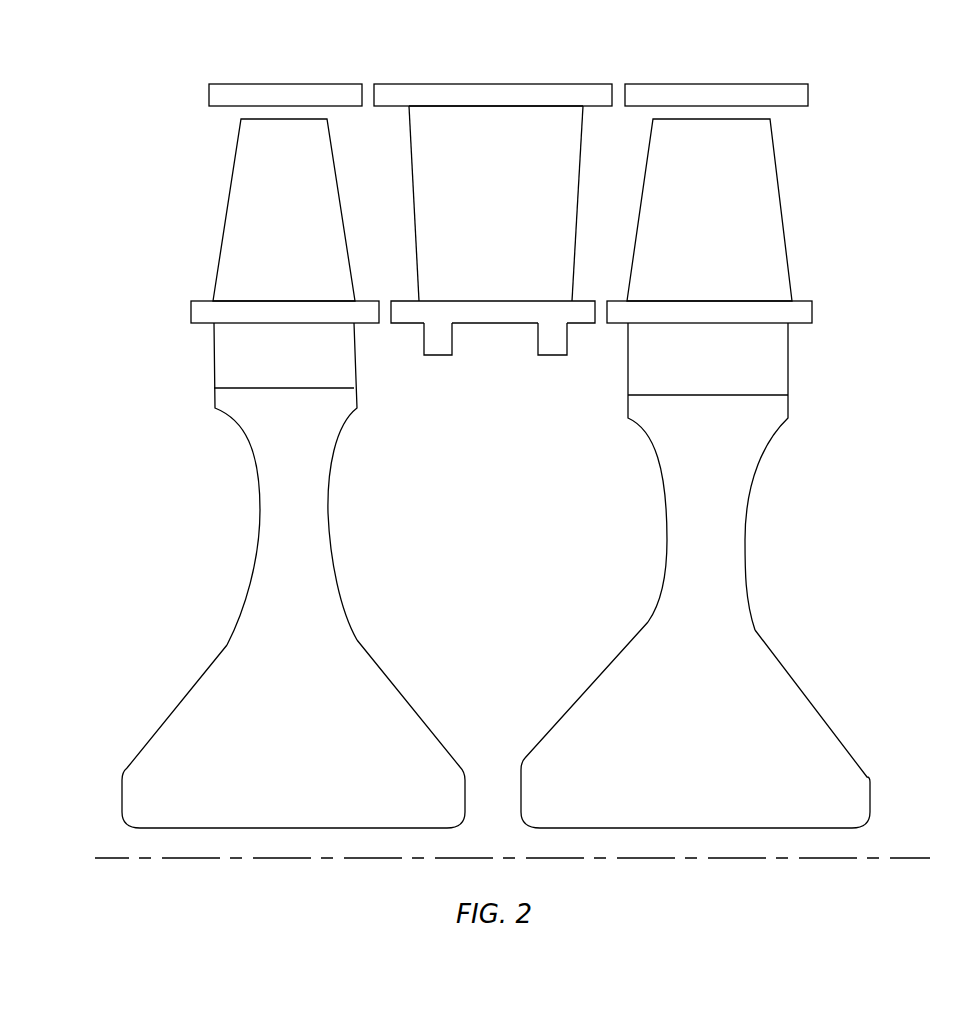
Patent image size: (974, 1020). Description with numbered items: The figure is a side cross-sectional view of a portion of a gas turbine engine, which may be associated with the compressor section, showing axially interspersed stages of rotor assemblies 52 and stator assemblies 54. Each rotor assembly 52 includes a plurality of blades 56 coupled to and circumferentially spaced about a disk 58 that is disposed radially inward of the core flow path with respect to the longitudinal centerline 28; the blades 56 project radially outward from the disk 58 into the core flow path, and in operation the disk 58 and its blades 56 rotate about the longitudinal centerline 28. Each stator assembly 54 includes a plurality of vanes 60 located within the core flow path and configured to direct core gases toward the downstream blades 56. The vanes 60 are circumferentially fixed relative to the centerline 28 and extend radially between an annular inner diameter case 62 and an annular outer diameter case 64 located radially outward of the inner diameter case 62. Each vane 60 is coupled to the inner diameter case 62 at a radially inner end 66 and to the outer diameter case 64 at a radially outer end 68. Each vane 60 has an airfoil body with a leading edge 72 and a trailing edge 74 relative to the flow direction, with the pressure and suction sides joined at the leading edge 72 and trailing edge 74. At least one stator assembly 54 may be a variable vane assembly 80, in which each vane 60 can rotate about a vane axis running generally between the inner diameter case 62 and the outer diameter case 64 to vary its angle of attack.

The longitudinal centerline 28 is at (923, 856).
The rotor assembly 52 is at (514, 564).
The stator assembly 54 is at (430, 365).
The blade 56 is at (268, 261).
The disk 58 is at (242, 648).
The vane 60 is at (487, 203).
The inner diameter (ID) case 62 is at (495, 313).
The outer diameter (OD) case 64 is at (507, 90).
The radially inner end 66 is at (498, 337).
The radially outer end 68 is at (467, 106).
The leading edge 72 is at (413, 227).
The trailing edge 74 is at (583, 148).
The variable vane assembly 80 is at (575, 330).